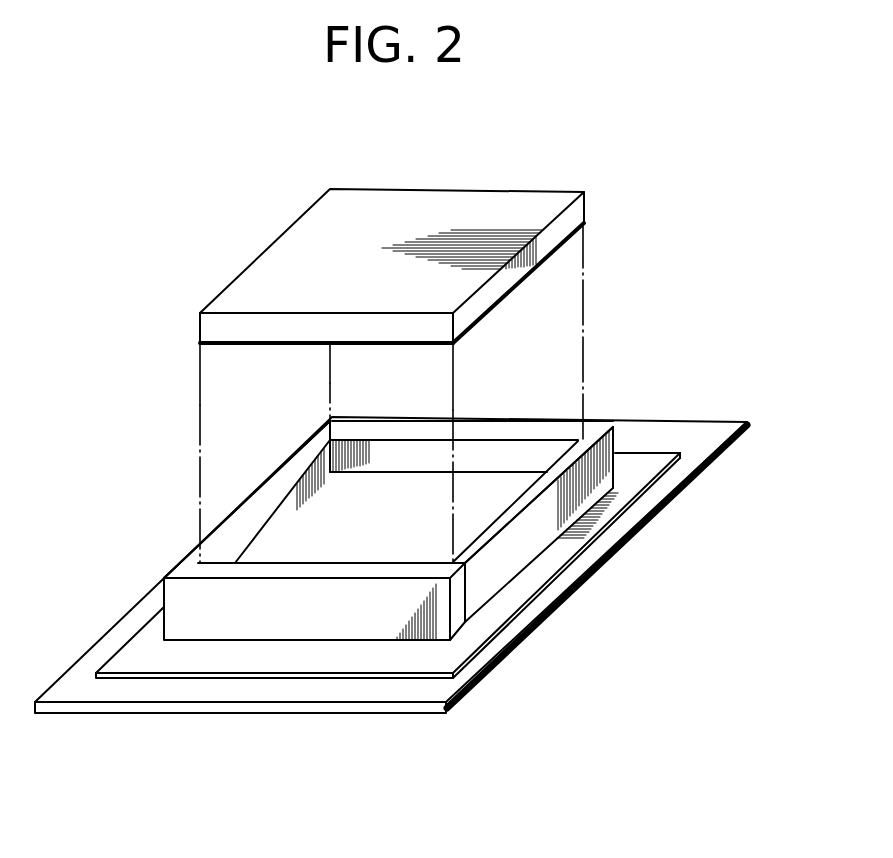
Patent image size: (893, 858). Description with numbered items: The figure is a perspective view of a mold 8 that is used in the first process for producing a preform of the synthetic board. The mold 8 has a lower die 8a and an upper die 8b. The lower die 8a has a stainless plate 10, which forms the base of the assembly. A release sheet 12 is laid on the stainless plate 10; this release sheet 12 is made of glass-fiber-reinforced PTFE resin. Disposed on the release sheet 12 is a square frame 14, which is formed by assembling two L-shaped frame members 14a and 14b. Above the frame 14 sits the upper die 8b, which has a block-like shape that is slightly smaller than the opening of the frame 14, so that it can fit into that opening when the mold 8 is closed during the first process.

The mold 8 is at (472, 369).
The lower die 8a is at (614, 370).
The upper die 8b is at (578, 210).
The stainless plate 10 is at (325, 712).
The release sheet 12 is at (235, 675).
The square frame 14 is at (415, 481).
The L-shaped frame member 14a is at (283, 478).
The L-shaped frame member 14b is at (528, 538).